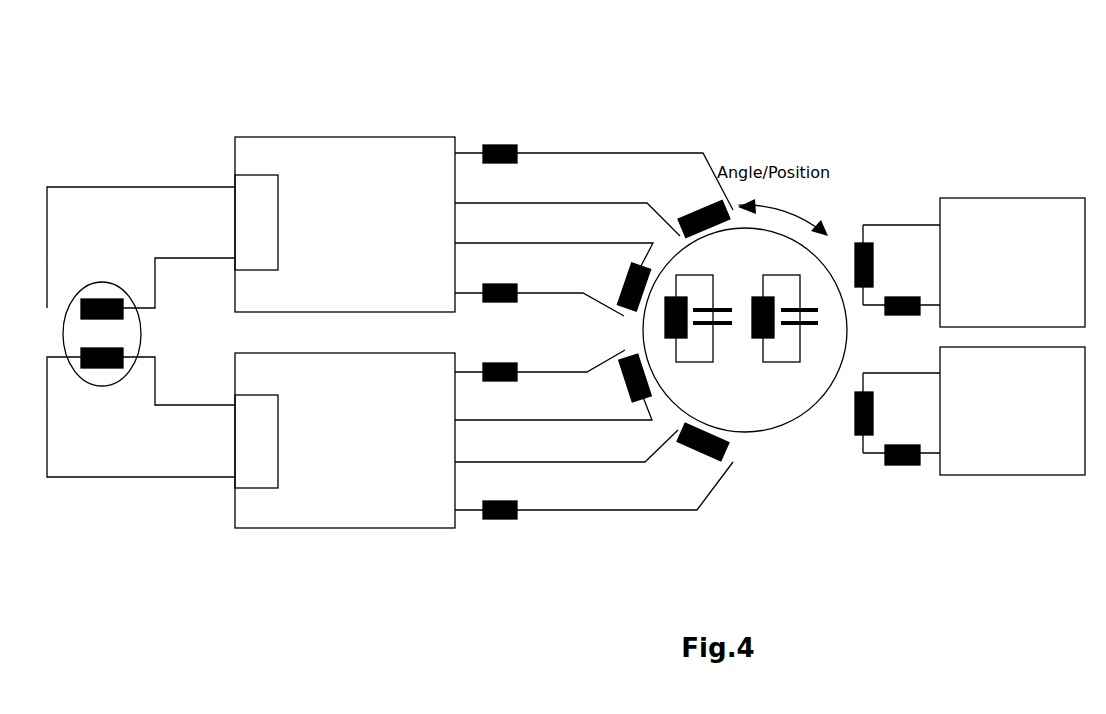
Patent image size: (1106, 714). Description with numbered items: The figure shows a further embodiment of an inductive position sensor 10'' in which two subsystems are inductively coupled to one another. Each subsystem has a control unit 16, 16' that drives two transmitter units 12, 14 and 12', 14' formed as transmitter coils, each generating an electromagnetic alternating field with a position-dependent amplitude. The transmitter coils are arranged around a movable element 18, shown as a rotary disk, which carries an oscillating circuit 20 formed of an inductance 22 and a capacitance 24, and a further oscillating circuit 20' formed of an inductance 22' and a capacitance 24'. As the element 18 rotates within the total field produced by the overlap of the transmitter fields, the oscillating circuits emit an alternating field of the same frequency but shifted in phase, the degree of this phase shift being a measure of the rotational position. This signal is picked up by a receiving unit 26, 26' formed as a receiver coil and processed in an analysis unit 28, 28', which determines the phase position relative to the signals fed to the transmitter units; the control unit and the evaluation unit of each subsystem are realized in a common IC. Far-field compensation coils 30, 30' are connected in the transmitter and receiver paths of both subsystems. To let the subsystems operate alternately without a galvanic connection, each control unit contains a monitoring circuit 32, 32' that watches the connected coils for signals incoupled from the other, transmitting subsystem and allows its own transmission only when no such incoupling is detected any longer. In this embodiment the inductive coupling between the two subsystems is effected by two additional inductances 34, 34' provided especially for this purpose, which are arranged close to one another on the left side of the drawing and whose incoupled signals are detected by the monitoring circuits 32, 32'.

The position sensor 10'' is at (880, 47).
The transmitter unit 12 is at (690, 164).
The transmitter unit 12' is at (593, 403).
The transmitter unit 14 is at (604, 209).
The transmitter unit 14' is at (718, 484).
The control unit 16 is at (345, 191).
The control unit 16' is at (345, 476).
The movable element 18 is at (795, 260).
The oscillating circuit 20 is at (659, 261).
The oscillating circuit 20' is at (791, 377).
The inductance 22 is at (694, 352).
The inductance 22' is at (765, 352).
The capacitance 24 is at (719, 279).
The capacitance 24' is at (820, 410).
The receiving unit 26 is at (887, 230).
The receiving unit 26' is at (887, 380).
The analysis unit 28 is at (1012, 226).
The analysis unit 28' is at (1012, 441).
The far-field compensation coil 30 is at (688, 222).
The far-field compensation coil 30' is at (708, 385).
The monitoring circuit 32 is at (290, 222).
The monitoring circuit 32' is at (295, 441).
The additional inductance 34 is at (102, 304).
The additional inductance 34' is at (102, 398).